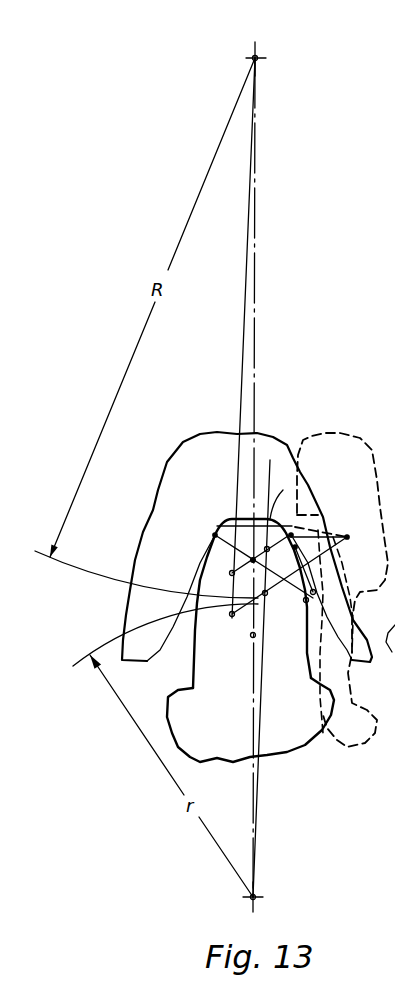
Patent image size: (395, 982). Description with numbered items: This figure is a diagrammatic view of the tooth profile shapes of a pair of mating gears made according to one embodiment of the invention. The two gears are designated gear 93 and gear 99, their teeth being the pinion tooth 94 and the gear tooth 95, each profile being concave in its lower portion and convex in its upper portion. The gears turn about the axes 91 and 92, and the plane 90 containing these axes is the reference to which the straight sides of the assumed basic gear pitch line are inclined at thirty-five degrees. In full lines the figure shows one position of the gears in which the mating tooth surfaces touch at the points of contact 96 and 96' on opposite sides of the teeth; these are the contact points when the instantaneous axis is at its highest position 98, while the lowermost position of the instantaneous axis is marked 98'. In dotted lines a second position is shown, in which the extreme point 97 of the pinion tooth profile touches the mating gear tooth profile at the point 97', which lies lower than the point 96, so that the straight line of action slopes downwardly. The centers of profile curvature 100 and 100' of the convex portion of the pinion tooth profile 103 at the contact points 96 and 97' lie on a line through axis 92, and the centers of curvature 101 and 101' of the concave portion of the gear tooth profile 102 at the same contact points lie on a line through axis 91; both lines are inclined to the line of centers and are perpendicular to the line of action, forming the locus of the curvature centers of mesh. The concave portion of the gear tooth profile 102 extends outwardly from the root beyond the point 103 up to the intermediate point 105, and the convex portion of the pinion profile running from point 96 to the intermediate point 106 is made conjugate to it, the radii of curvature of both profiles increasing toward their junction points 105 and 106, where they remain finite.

The plane 90 is at (255, 343).
The axis of mating gear 91 is at (259, 55).
The axis of mating gear 92 is at (258, 897).
The gear 93 is at (197, 447).
The pinion tooth 94 is at (196, 636).
The gear tooth 95 is at (128, 598).
The point of contact 96 is at (280, 497).
The point of contact 96' is at (182, 584).
The extreme point of pinion tooth profile 97 is at (265, 676).
The point of contact 97' is at (343, 590).
The highest position of instantaneous axis 98 is at (264, 565).
The lowermost position of instantaneous axis 98' is at (238, 654).
The gear 99 is at (297, 744).
The center of profile curvature 100 is at (284, 558).
The center of profile curvature 100' is at (289, 575).
The center of curvature 101 is at (229, 338).
The center of curvature 101' is at (221, 632).
The gear tooth profile 102 is at (325, 652).
The pinion tooth profile 103 is at (290, 656).
The intermediate point 105 is at (315, 595).
The intermediate point 106 is at (304, 605).